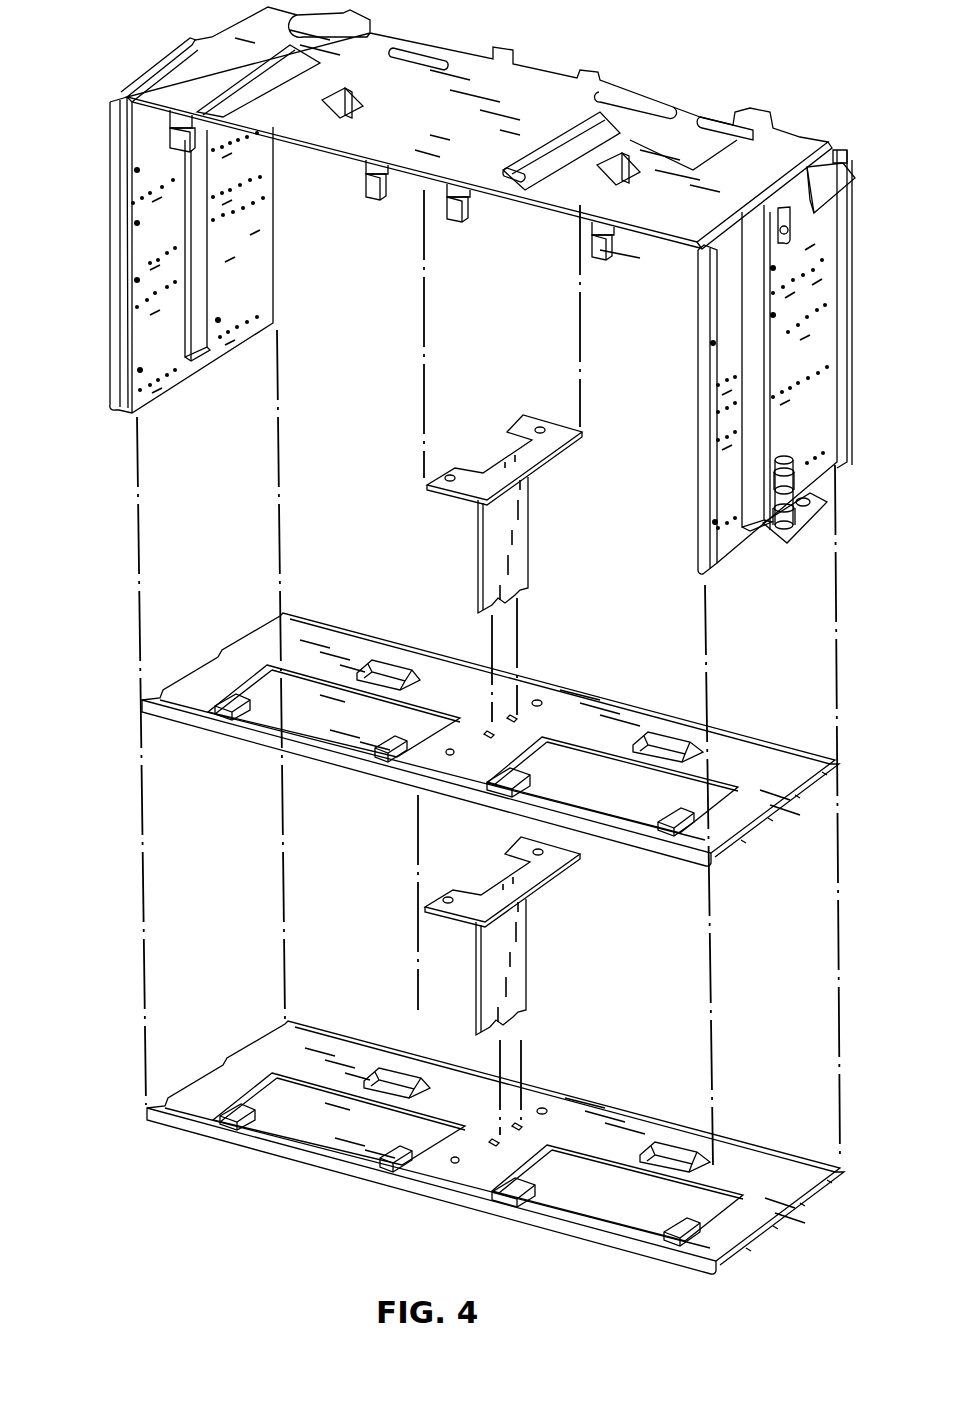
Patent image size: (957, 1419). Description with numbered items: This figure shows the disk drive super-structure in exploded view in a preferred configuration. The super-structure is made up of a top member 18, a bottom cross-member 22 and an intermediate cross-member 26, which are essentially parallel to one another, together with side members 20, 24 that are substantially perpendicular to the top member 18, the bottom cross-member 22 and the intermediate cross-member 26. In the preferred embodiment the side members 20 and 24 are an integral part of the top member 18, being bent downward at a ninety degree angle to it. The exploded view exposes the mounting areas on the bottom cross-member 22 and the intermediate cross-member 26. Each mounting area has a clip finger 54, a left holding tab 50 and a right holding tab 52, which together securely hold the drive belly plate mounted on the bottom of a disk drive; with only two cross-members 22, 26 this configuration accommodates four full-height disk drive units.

The top member 18 is at (553, 87).
The side member 20 is at (128, 280).
The bottom cross-member 22 is at (527, 1102).
The side member 24 is at (818, 290).
The intermediate cross-member 26 is at (525, 692).
The left holding tab 50 is at (232, 700).
The right holding tab 52 is at (397, 737).
The clip finger 54 is at (393, 665).